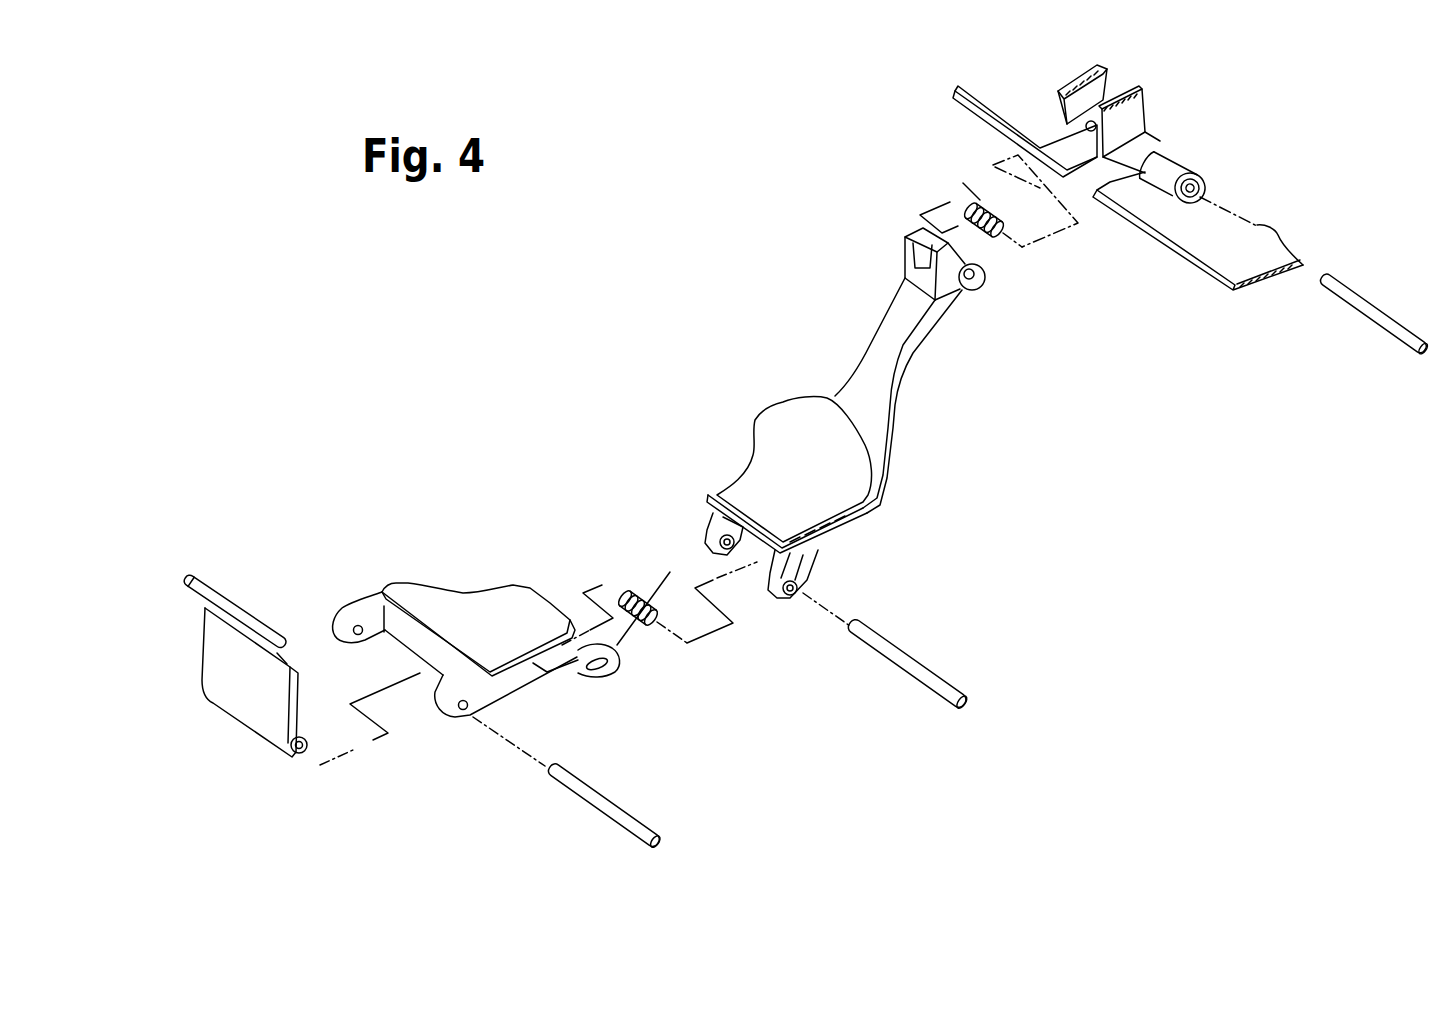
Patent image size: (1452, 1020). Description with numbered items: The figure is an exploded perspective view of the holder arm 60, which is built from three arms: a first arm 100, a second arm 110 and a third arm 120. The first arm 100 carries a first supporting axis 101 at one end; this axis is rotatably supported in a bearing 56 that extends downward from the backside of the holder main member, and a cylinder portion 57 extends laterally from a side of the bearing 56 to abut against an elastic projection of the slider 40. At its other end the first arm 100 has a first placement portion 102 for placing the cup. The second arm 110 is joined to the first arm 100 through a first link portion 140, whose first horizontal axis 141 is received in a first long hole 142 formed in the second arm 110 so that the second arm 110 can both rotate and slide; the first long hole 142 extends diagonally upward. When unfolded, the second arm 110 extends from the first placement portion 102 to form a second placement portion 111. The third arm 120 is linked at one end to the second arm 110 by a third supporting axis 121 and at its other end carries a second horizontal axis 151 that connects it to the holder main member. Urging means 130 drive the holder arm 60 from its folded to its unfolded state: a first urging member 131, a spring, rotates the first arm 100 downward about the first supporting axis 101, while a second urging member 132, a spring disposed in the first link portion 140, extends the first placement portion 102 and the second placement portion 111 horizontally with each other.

The slider 40 is at (1052, 88).
The bearing 56 is at (1130, 95).
The cylinder portion 57 is at (1183, 158).
The holder arm 60 is at (538, 413).
The first arm 100 is at (875, 420).
The first supporting axis 101 is at (1362, 303).
The first placement portion 102 is at (777, 420).
The second arm 110 is at (465, 605).
The second placement portion 111 is at (524, 617).
The third arm 120 is at (237, 683).
The third supporting axis 121 is at (627, 817).
The urging means 130 is at (985, 221).
The first urging member 131 is at (992, 236).
The second urging member 132 is at (657, 620).
The first link portion 140 is at (777, 720).
The first horizontal axis 141 is at (930, 678).
The first long hole 142 is at (595, 678).
The second horizontal axis 151 is at (233, 608).